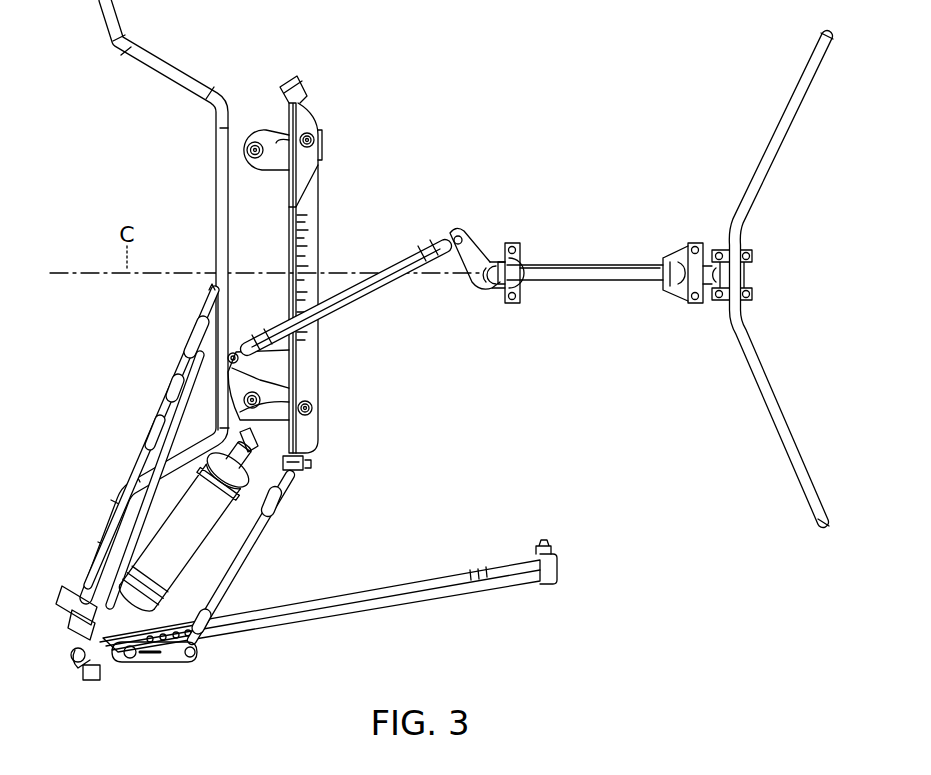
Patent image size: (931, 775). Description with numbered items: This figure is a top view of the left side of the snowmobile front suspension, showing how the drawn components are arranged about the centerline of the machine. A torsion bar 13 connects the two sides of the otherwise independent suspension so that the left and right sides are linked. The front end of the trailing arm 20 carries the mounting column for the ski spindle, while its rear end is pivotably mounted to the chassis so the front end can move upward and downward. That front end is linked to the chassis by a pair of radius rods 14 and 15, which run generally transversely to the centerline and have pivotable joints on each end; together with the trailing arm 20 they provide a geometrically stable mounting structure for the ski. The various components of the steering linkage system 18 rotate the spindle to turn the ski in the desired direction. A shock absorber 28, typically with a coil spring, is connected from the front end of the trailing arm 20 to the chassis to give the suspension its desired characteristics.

The torsion bar 13 is at (182, 78).
The radius rod 14 is at (170, 411).
The radius rod 15 is at (162, 458).
The steering linkage system 18 is at (307, 200).
The trailing arm 20 is at (318, 610).
The shock absorber 28 is at (170, 539).